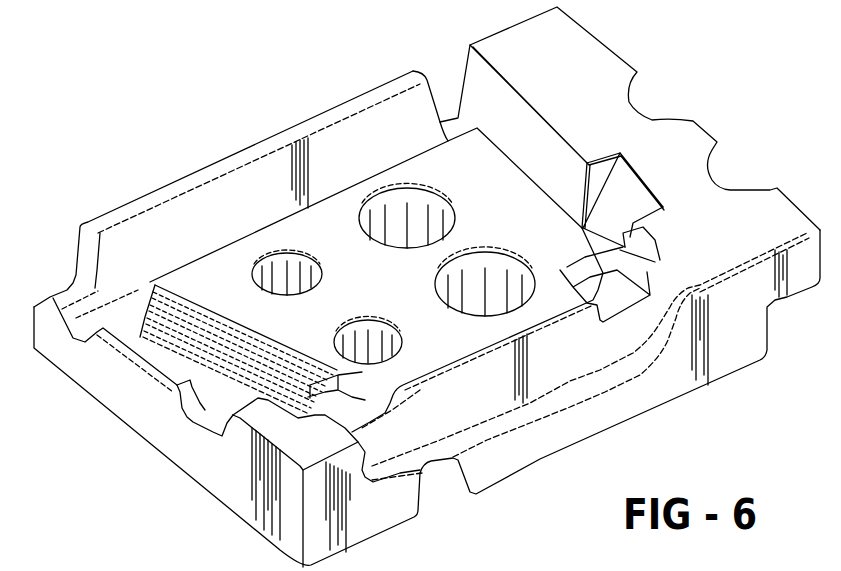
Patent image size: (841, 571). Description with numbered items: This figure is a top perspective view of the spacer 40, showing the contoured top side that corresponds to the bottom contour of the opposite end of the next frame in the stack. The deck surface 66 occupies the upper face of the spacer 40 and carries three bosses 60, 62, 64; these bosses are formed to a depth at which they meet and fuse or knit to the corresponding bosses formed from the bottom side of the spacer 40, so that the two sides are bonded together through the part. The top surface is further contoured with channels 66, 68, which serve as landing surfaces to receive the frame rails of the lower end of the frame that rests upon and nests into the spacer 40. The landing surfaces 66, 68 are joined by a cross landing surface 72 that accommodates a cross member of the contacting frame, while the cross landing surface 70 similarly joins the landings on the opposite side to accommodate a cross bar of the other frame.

The spacer 40 is at (652, 95).
The boss 60 is at (483, 277).
The boss 62 is at (368, 340).
The boss 64 is at (288, 275).
The deck surface 66 is at (225, 263).
The channel 68 is at (207, 415).
The cross landing surface 70 is at (279, 0).
The cross landing surface 72 is at (124, 310).